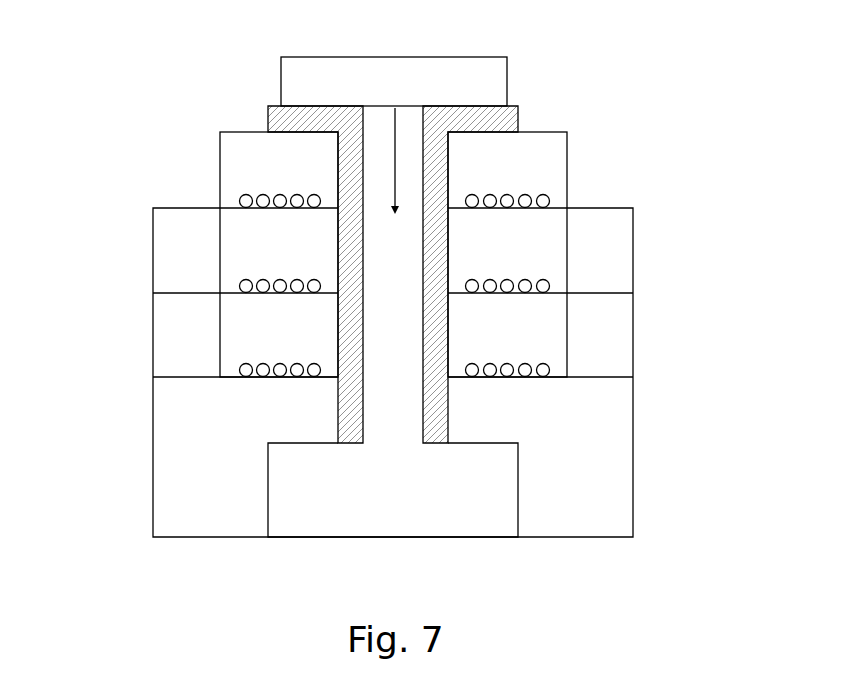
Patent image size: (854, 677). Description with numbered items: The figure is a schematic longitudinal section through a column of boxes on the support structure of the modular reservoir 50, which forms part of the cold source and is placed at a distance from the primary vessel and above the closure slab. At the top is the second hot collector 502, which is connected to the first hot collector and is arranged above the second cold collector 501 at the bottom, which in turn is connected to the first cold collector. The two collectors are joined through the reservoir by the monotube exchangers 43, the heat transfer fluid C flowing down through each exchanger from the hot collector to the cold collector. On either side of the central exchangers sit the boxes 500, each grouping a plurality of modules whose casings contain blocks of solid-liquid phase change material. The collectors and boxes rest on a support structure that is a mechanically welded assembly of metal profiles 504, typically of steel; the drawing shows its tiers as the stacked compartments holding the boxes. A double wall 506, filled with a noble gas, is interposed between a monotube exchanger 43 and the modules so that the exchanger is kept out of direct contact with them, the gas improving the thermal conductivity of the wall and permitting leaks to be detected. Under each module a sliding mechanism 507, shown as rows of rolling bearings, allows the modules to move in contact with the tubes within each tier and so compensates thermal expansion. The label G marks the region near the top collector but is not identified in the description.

The reservoir 50 is at (176, 124).
The monotube exchanger 43 is at (355, 128).
The gas passage G is at (508, 63).
The second hot collector 502 is at (520, 120).
The box 500 is at (248, 160).
The sliding mechanism 507 is at (237, 203).
The metal profile 504 is at (153, 270).
The double wall 506 is at (448, 410).
The second cold collector 501 is at (290, 525).